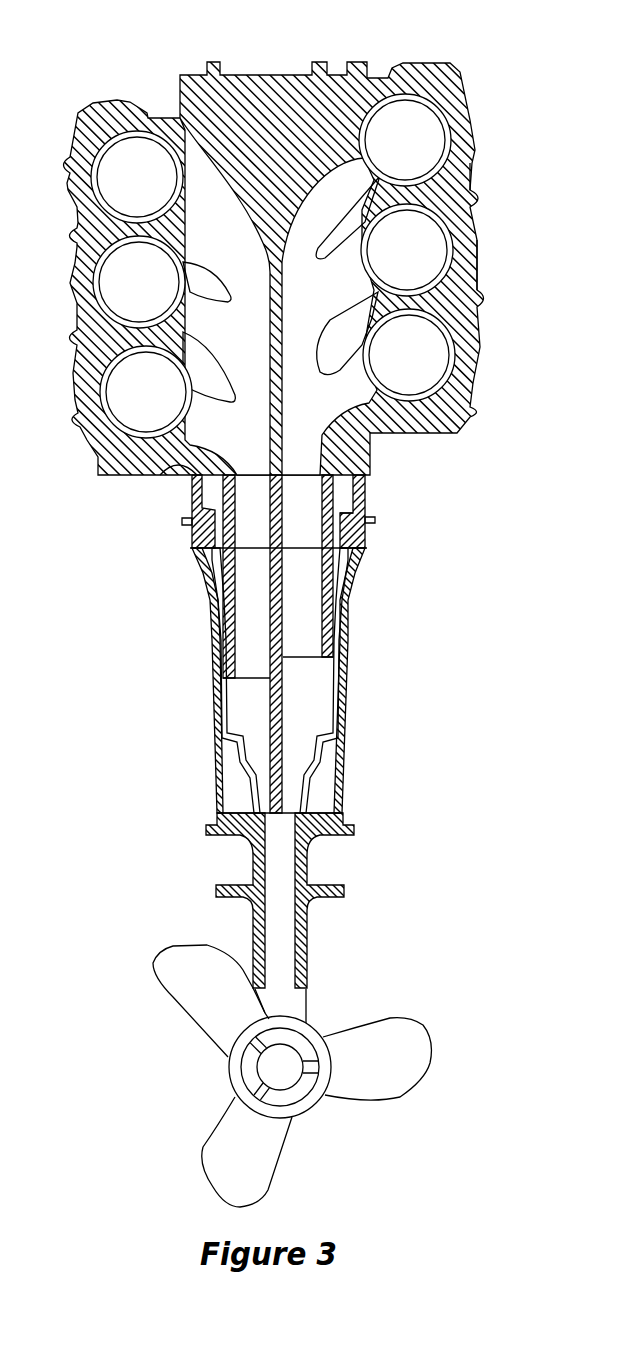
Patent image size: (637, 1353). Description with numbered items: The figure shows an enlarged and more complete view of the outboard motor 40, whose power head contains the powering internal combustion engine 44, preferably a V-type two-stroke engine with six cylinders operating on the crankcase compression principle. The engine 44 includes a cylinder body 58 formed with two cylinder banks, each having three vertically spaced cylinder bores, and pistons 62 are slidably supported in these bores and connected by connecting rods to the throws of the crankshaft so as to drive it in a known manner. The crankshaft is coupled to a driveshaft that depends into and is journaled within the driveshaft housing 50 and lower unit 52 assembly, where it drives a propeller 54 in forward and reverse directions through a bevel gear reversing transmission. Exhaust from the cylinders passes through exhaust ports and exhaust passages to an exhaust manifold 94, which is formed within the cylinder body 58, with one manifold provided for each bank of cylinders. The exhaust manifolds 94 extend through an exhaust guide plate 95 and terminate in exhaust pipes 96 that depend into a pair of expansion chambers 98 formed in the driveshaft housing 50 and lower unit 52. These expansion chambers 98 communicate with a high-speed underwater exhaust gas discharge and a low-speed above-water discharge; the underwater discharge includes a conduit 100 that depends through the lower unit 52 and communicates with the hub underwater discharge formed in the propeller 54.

The internal combustion engine 44 is at (318, 240).
The outboard motor 40 is at (470, 118).
The cylinder body 58 is at (482, 176).
The pistons 62 is at (273, 266).
The exhaust manifold 94 is at (318, 633).
The exhaust guide plate 95 is at (368, 537).
The exhaust pipes 96 is at (273, 680).
The expansion chambers 98 is at (350, 710).
The driveshaft housing 50 is at (278, 680).
The conduit 100 is at (275, 932).
The lower unit 52 is at (308, 958).
The propeller 54 is at (413, 1018).